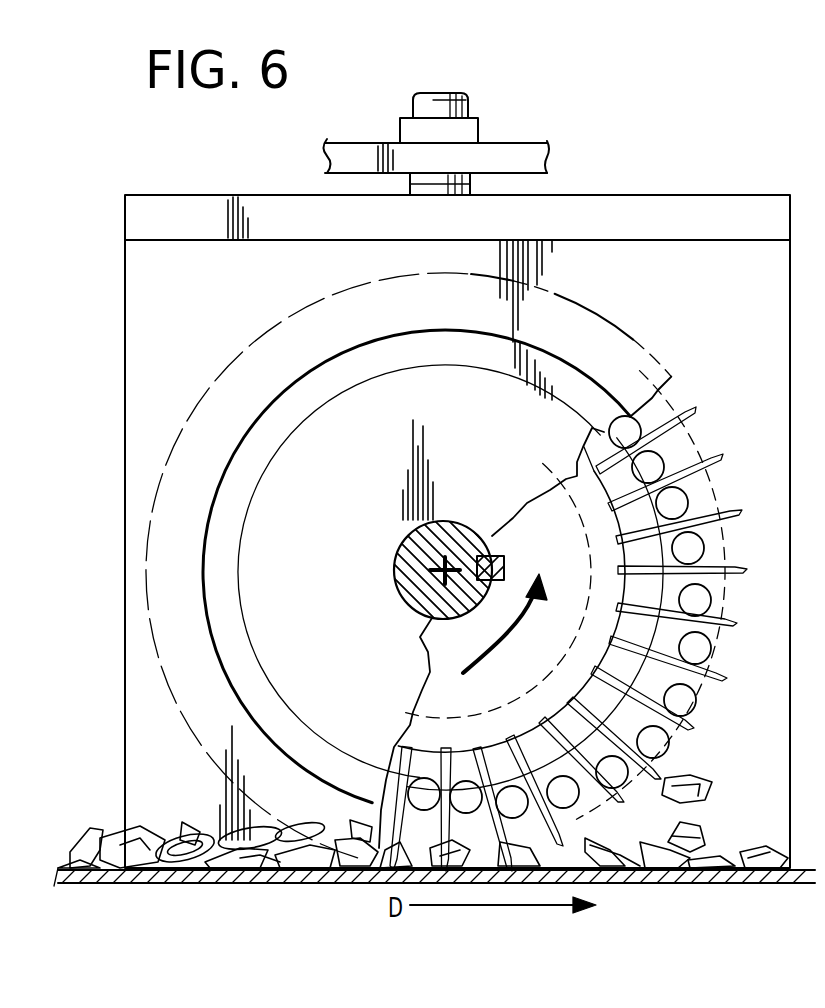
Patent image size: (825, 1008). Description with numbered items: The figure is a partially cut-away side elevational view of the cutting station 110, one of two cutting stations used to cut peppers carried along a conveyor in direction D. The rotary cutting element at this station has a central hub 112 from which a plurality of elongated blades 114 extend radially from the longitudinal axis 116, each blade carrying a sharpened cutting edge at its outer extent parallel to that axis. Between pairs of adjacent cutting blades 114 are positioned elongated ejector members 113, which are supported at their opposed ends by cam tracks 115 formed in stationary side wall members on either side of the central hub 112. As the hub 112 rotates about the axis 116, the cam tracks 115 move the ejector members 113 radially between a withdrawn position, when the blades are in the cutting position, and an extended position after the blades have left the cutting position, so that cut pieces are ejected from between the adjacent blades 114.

The cutting station 110 is at (687, 190).
The central hub 112 is at (562, 557).
The elongated ejector members 113 is at (676, 500).
The elongated blades 114 is at (693, 412).
The cam tracks 115 is at (573, 383).
The longitudinal axis 116 is at (458, 563).